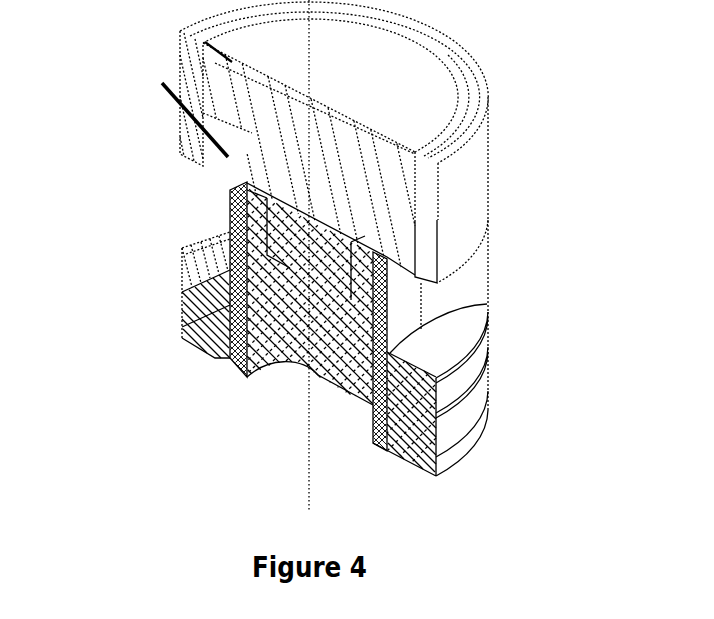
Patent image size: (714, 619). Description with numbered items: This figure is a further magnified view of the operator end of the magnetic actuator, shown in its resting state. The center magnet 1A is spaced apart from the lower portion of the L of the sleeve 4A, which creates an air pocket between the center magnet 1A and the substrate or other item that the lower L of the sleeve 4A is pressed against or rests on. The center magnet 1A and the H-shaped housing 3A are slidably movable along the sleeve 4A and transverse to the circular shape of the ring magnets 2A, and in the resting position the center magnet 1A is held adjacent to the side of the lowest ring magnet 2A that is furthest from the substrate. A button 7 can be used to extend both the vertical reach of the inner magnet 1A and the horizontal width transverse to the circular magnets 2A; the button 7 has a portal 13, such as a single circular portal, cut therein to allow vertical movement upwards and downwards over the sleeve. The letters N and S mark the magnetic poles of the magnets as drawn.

The center magnet 1A is at (485, 245).
The ring magnet 2A is at (213, 273).
The H-shaped housing 3A is at (487, 317).
The sleeve 4A is at (228, 232).
The button 7 is at (334, 224).
The portal 13 is at (185, 114).
The north pole N is at (200, 250).
The south pole S is at (212, 350).